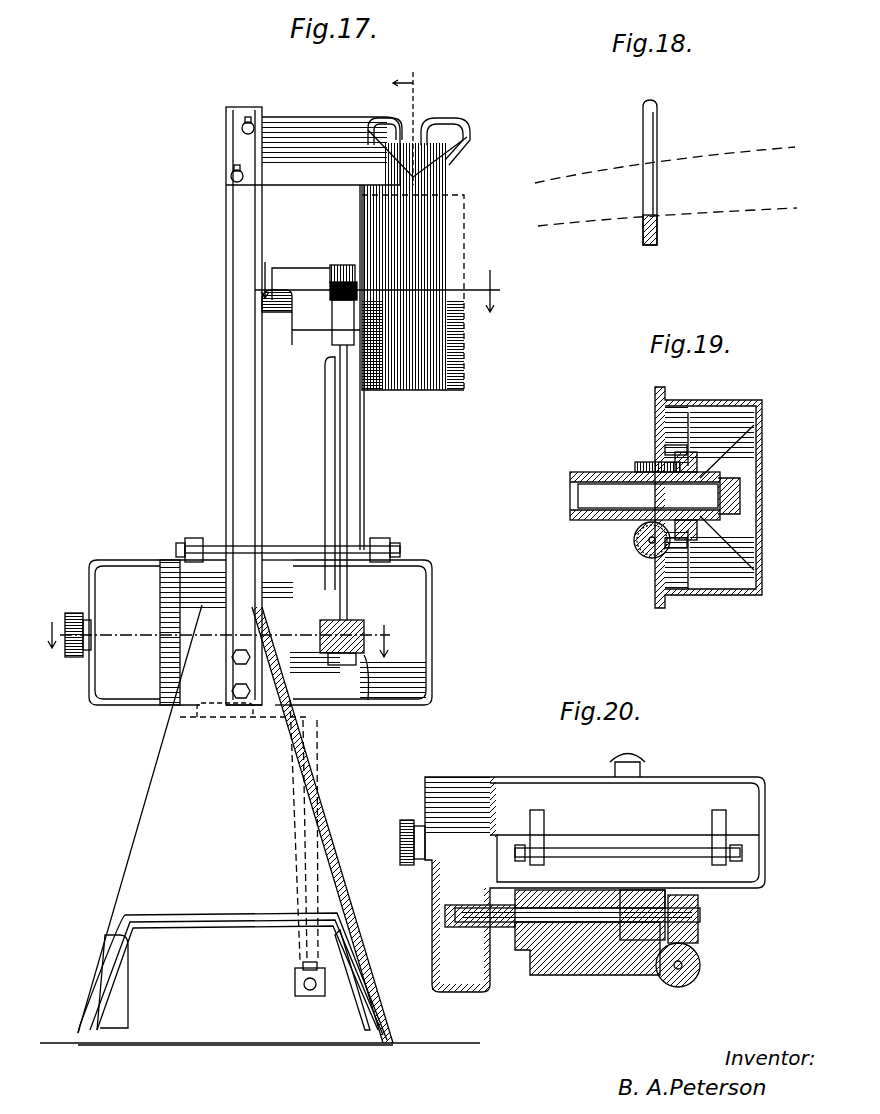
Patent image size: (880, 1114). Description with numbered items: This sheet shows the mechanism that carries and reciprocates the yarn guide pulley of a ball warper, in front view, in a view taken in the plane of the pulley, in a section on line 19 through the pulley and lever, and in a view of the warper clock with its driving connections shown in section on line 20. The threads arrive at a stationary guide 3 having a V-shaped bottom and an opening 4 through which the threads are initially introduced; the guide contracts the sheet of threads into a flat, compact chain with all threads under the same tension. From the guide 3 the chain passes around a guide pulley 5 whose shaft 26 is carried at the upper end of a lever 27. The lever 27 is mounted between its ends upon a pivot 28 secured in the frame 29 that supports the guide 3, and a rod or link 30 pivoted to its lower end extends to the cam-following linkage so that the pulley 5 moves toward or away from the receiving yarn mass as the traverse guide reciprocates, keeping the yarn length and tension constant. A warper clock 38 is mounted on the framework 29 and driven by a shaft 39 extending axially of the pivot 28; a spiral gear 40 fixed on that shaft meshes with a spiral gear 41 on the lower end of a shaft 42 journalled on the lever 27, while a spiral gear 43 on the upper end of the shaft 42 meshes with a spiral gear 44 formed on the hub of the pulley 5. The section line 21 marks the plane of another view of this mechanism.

In FIG. 17, the stationary guide 3 is at (447, 136).
In FIG. 18, the stationary guide 3 is at (666, 170).
In FIG. 17, the opening 4 is at (418, 125).
In FIG. 17, the guide pulley 5 is at (464, 242).
In FIG. 19, the guide pulley 5 is at (742, 402).
In FIG. 17, the section line 19— 19 is at (404, 208).
In FIG. 17, the section line 20— 20 is at (386, 276).
In FIG. 17, the section line 21-21 / knob 21 is at (226, 626).
In FIG. 19, the shaft 26 is at (615, 492).
In FIG. 17, the lever 27 is at (320, 452).
In FIG. 19, the lever 27 is at (588, 470).
In FIG. 20, the lever 27 is at (636, 950).
In FIG. 20, the pivot 28 is at (620, 950).
In FIG. 17, the frame 29 is at (145, 838).
In FIG. 17, the rod or link 30 is at (310, 1000).
In FIG. 17, the warper clock 38 is at (120, 562).
In FIG. 20, the warper clock 38 is at (705, 778).
In FIG. 20, the shaft 39 is at (552, 970).
In FIG. 20, the spiral gear 40 is at (698, 905).
In FIG. 17, the spiral gear 41 is at (350, 679).
In FIG. 20, the spiral gear 41 is at (700, 968).
In FIG. 17, the shaft 42 is at (345, 510).
In FIG. 19, the shaft 42 is at (640, 558).
In FIG. 20, the shaft 42 is at (678, 969).
In FIG. 17, the spiral gear 43 is at (332, 292).
In FIG. 17, the spiral gear 44 is at (342, 265).
In FIG. 19, the spiral gear 44 is at (642, 468).